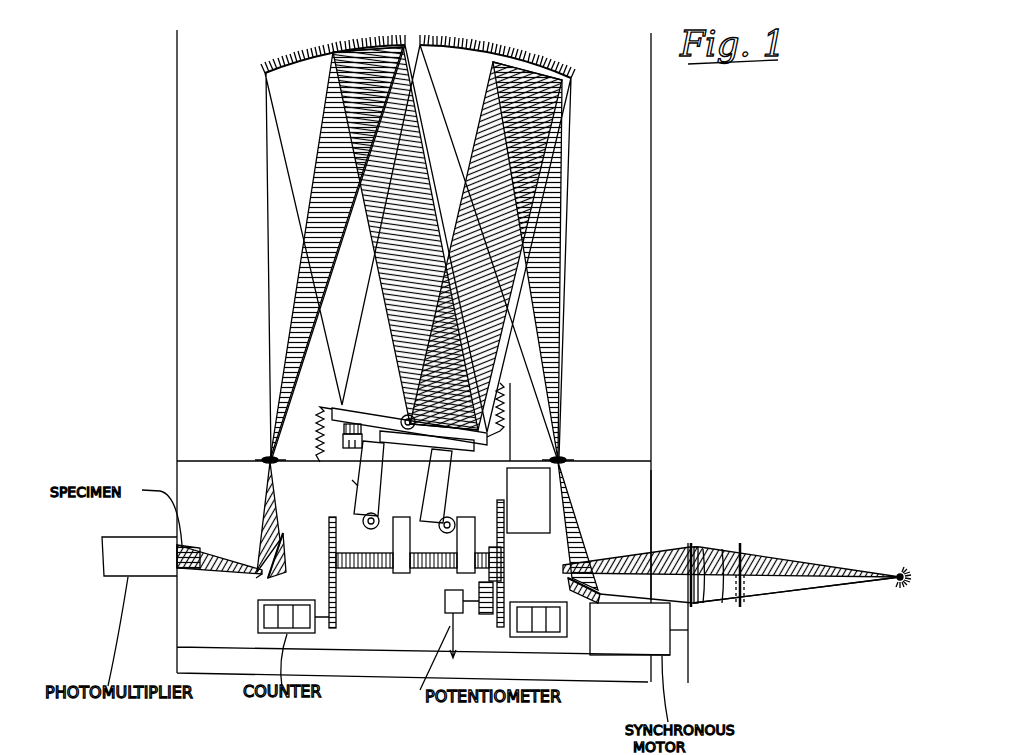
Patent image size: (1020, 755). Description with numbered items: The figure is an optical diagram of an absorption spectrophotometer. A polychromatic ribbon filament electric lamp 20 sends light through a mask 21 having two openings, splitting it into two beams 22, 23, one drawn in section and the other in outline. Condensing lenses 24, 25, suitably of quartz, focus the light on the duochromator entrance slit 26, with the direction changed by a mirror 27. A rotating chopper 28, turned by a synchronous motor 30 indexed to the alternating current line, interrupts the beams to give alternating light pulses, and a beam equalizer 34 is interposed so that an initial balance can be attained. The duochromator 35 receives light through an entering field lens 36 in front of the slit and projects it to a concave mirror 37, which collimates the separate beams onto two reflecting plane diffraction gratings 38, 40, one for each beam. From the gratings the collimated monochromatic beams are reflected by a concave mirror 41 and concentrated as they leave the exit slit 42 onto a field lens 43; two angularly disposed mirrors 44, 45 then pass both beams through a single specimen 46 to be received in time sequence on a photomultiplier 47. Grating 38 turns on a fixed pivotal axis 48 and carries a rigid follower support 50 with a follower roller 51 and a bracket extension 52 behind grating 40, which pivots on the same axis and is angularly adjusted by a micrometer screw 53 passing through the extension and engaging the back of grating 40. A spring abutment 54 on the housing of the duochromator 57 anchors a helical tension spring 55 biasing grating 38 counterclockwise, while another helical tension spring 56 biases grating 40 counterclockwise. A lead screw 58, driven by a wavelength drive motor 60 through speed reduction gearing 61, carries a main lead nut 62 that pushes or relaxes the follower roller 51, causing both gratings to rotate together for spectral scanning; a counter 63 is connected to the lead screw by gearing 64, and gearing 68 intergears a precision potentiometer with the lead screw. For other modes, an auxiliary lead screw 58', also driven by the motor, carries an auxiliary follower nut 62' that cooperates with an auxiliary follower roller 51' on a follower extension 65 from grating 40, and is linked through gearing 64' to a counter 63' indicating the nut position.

The ribbon filament electric lamp 20 is at (892, 572).
The mask 21 is at (693, 545).
The light beam 22 is at (685, 549).
The light beam 23 is at (784, 586).
The condensing lens 24 is at (708, 600).
The condensing lens 25 is at (722, 604).
The duochromator entrance slit 26 is at (563, 456).
The mirror 27 is at (580, 592).
The rotating chopper 28 is at (691, 668).
The synchronous motor 30 is at (633, 640).
The beam equalizer 34 is at (742, 545).
The duochromator 35 is at (645, 169).
The entering field lens 36 is at (576, 466).
The concave mirror 37 is at (494, 50).
The diffraction grating 38 is at (438, 456).
The diffraction grating 40 is at (366, 416).
The concave mirror 41 is at (316, 52).
The exit slit 42 is at (264, 457).
The field lens 43 is at (277, 464).
The mirror 44 is at (286, 548).
The mirror 45 is at (258, 577).
The specimen 46 is at (204, 548).
The photomultiplier 47 is at (126, 540).
The pivotal axis 48 is at (404, 415).
The follower support 50 is at (460, 493).
The follower roller 51 is at (449, 491).
The auxiliary follower roller 51' is at (386, 511).
The bracket extension 52 is at (377, 470).
The micrometer screw 53 is at (350, 450).
The spring abutment 54 is at (510, 428).
The helical tension spring 55 is at (504, 395).
The helical tension spring 56 is at (321, 411).
The duochromator housing 57 is at (652, 269).
The lead screw 58 is at (449, 575).
The auxiliary lead screw 58' is at (367, 585).
The wavelength drive motor 60 is at (505, 560).
The speed reduction gearing 61 is at (450, 612).
The main lead nut 62 is at (447, 545).
The auxiliary follower nut 62' is at (380, 545).
The counter 63 is at (543, 630).
The counter 63' is at (293, 602).
The gearing 64 is at (515, 573).
The gearing 64' is at (351, 572).
The follower extension 65 is at (352, 484).
The gearing 68 is at (487, 616).